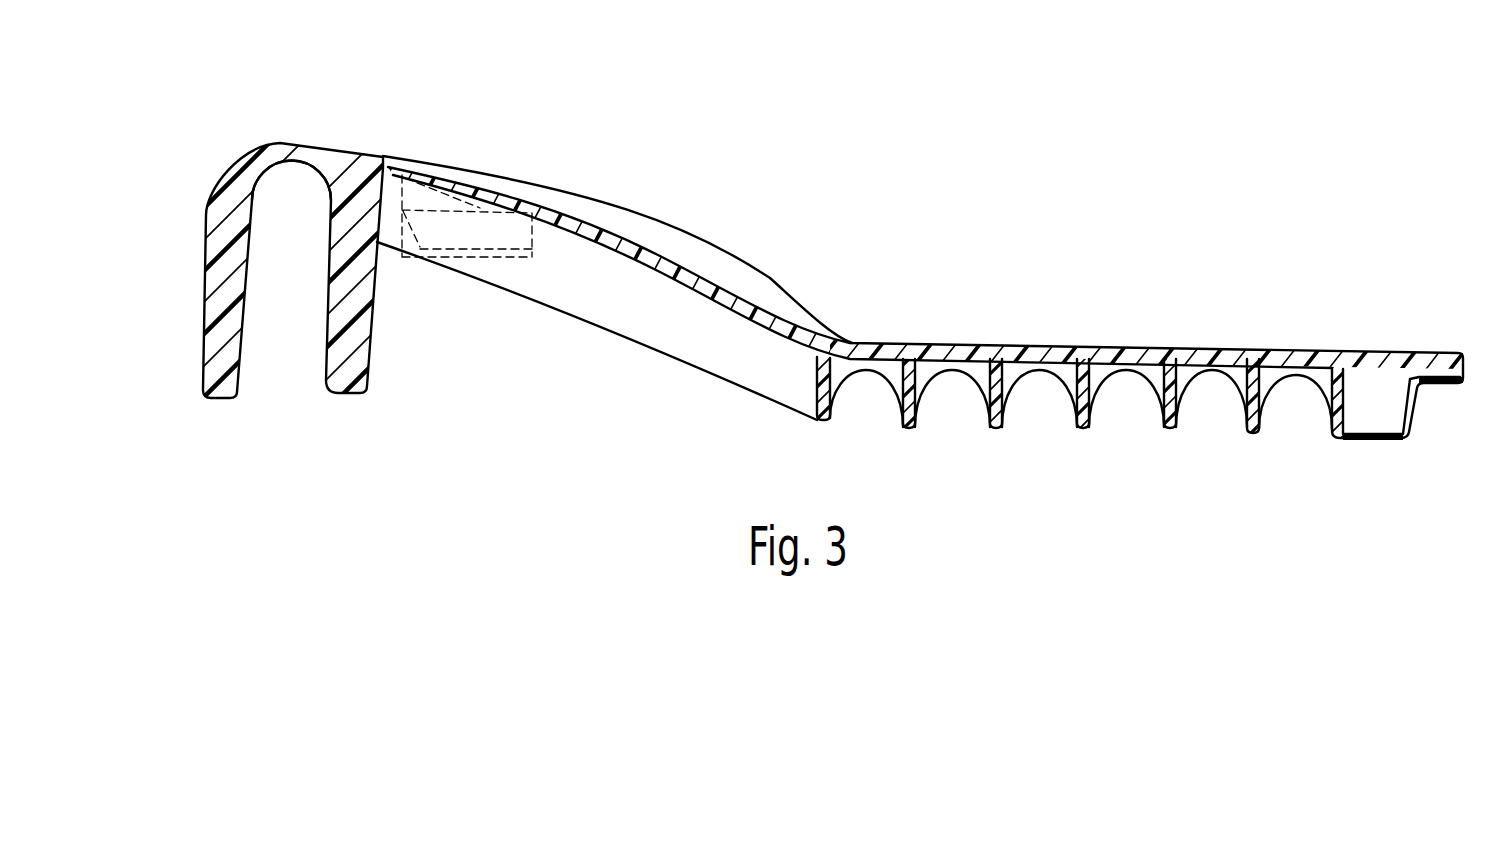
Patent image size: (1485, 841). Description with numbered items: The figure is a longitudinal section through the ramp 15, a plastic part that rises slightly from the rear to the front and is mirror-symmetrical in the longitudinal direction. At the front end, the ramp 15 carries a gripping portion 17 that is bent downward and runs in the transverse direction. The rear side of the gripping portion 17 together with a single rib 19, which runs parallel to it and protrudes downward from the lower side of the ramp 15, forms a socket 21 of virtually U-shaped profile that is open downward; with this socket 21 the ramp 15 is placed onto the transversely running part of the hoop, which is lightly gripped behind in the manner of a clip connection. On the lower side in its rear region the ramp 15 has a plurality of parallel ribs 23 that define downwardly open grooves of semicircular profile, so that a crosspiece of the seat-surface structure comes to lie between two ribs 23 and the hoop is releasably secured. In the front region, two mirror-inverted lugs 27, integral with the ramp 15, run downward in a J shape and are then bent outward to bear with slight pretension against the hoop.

The ramp 15 is at (462, 169).
The gripping portion 17 is at (222, 250).
The single rib 19 is at (355, 298).
The socket 21 is at (303, 257).
The parallel ribs 23 is at (908, 430).
The lugs 27 is at (458, 238).